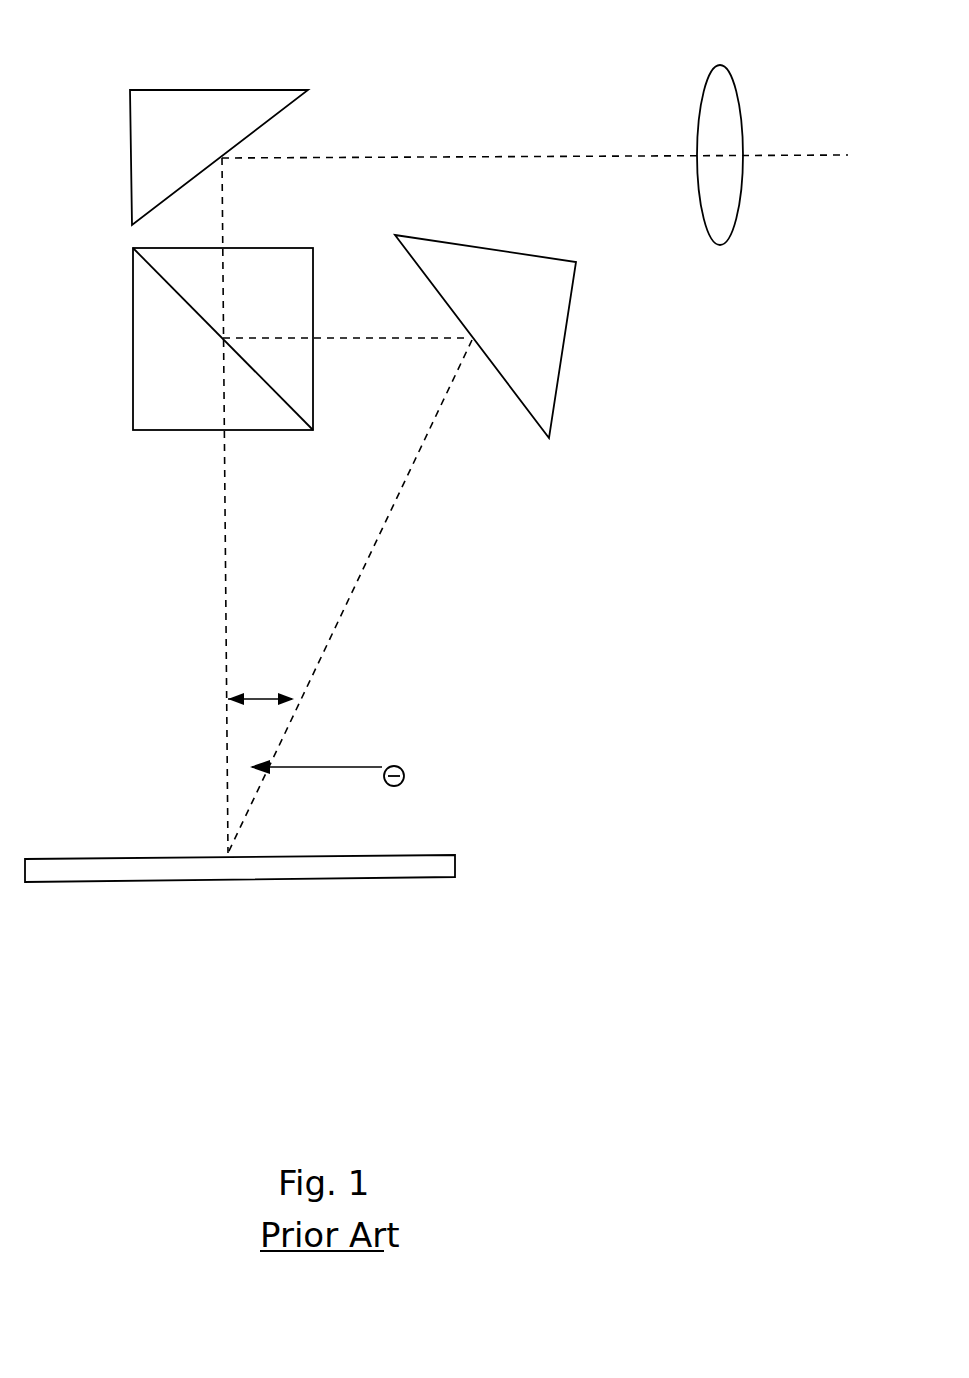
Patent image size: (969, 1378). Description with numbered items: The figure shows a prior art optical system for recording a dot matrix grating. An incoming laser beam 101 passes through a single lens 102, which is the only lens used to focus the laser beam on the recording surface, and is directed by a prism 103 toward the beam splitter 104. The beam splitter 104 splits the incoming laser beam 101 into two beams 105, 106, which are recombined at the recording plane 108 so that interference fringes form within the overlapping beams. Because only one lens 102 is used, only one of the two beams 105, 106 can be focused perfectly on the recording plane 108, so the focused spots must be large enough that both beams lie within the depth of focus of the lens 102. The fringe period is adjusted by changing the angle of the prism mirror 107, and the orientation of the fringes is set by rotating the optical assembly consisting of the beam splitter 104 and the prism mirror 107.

The incoming laser beam 101 is at (794, 142).
The lens 102 is at (703, 80).
The prism 103 is at (227, 88).
The beam splitter 104 is at (128, 308).
The beam 105 is at (214, 565).
The beam 106 is at (376, 560).
The prism mirror 107 is at (574, 336).
The recording plane 108 is at (174, 888).